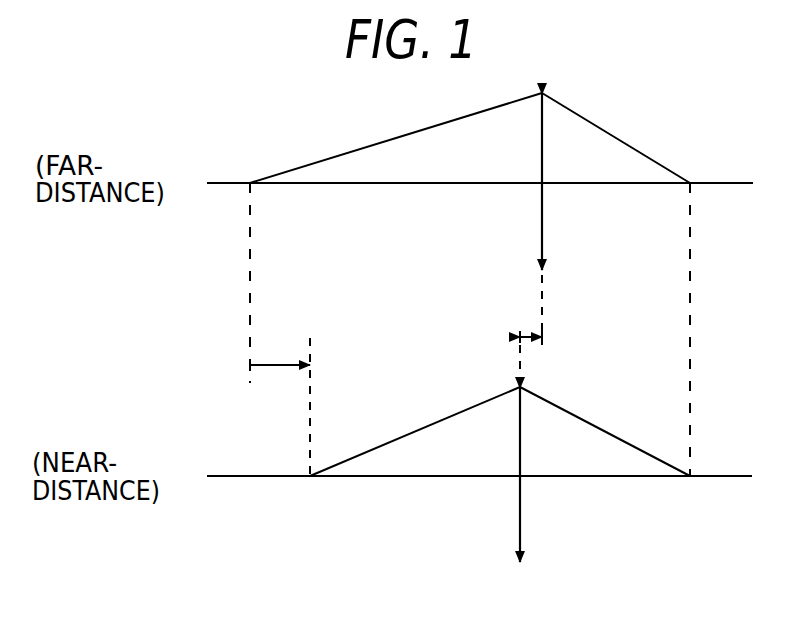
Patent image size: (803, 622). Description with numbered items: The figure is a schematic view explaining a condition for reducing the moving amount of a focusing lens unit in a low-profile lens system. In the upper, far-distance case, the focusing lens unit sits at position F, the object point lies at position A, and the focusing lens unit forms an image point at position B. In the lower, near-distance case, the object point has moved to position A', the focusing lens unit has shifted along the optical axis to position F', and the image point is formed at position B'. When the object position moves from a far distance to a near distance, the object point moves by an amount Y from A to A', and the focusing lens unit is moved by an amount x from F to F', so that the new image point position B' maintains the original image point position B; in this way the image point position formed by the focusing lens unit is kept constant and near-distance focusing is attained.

The object point position in far-distance in-focus state A is at (249, 265).
The image point position in far-distance in-focus state B is at (693, 312).
The focusing lens unit position in far-distance in-focus state F is at (542, 203).
The object point position in near-distance in-focus state A' is at (295, 407).
The image point position in near-distance in-focus state B' is at (709, 458).
The focusing lens unit position in near-distance in-focus state F' is at (520, 470).
The moving amount of the focusing lens unit x is at (530, 326).
The moving amount of the object point Y is at (280, 350).